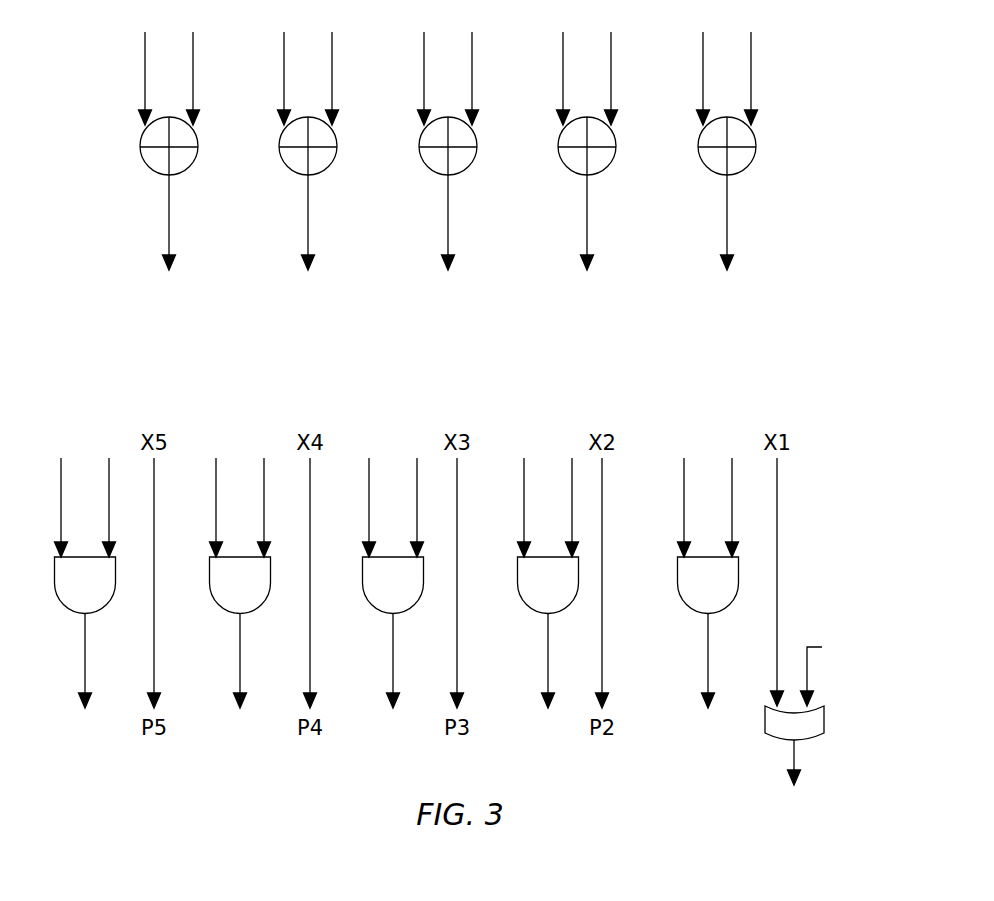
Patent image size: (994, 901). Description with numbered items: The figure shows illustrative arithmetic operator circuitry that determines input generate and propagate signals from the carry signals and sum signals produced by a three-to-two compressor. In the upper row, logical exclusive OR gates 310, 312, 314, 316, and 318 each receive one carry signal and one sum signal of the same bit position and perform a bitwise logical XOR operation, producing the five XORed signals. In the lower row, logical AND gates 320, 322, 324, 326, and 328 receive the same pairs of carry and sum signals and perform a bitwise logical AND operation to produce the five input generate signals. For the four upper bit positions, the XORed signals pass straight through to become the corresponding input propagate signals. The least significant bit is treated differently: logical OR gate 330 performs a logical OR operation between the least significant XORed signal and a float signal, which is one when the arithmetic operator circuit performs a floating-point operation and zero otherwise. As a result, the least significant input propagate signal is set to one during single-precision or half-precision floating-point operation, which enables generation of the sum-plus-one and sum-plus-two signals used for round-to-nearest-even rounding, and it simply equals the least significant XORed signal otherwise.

The logical exclusive OR gate 310 is at (701, 165).
The logical exclusive OR gate 312 is at (561, 165).
The logical exclusive OR gate 314 is at (422, 165).
The logical exclusive OR gate 316 is at (282, 165).
The logical exclusive OR gate 318 is at (143, 165).
The logical AND gate 320 is at (693, 607).
The logical AND gate 322 is at (531, 607).
The logical AND gate 324 is at (378, 607).
The logical AND gate 326 is at (225, 607).
The logical AND gate 328 is at (70, 607).
The logical OR gate 330 is at (824, 718).